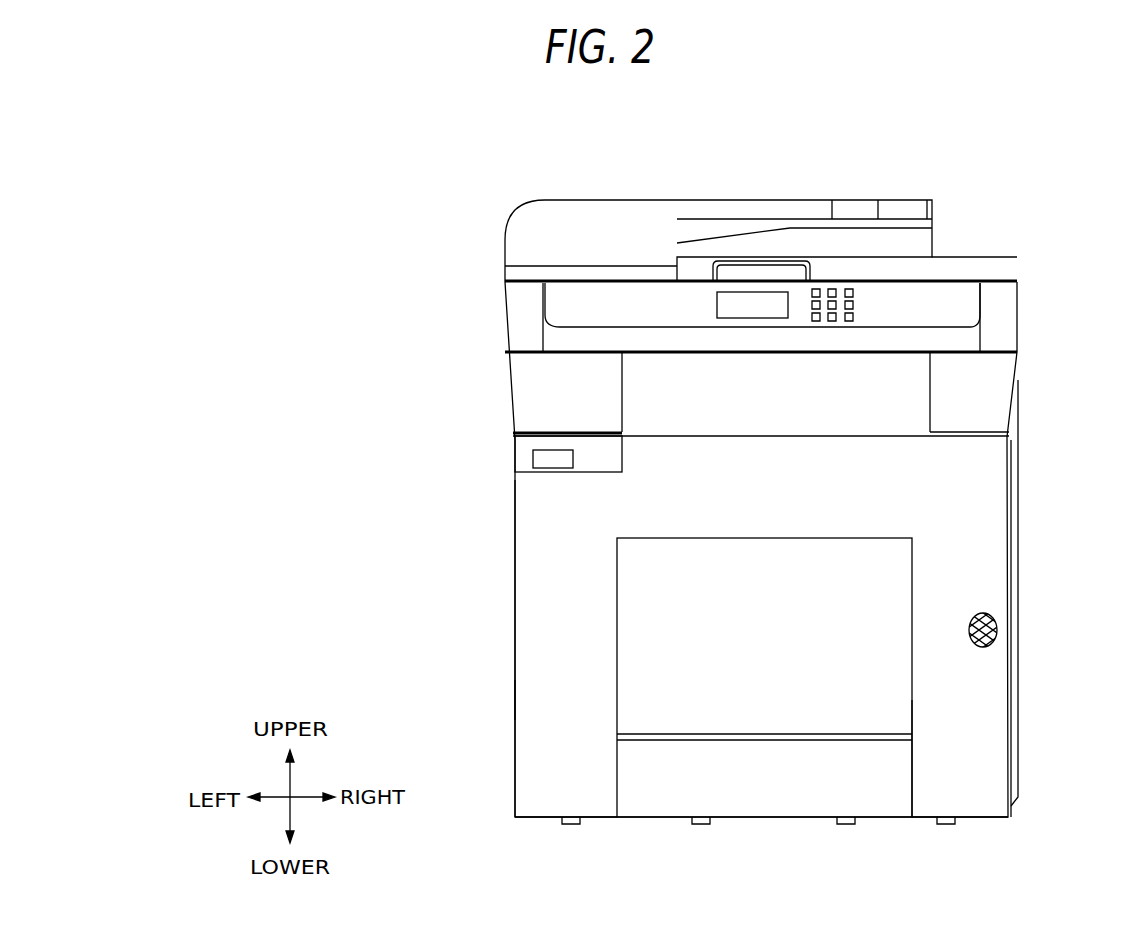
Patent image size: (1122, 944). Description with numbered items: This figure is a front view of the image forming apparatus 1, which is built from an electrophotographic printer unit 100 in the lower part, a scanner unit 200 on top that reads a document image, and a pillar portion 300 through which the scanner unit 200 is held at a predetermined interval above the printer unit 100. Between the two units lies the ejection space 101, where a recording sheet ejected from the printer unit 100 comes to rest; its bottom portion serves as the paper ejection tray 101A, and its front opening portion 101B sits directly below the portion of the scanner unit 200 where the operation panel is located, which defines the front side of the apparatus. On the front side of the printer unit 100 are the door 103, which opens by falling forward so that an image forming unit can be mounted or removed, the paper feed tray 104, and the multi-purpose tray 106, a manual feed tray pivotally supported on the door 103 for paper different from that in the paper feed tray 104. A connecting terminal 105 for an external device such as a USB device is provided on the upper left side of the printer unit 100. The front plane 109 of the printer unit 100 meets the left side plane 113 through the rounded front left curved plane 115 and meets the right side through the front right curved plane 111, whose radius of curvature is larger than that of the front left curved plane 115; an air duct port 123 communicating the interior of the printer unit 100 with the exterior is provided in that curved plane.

The image forming apparatus 1 is at (780, 178).
The printer unit 100 is at (934, 457).
The ejection space 101 is at (888, 383).
The paper ejection tray 101A is at (820, 427).
The opening portion 101B is at (930, 402).
The scanner unit 200 is at (633, 188).
The pillar portion 300 is at (527, 386).
The connecting terminal 105 is at (545, 465).
The left side plane 113 is at (515, 622).
The door 103 is at (505, 703).
The front left curved plane 115 is at (515, 767).
The front plane 109 is at (550, 790).
The paper feed tray 104 is at (680, 780).
The multi-purpose tray 106 is at (883, 712).
The front right curved plane 111 is at (975, 783).
The air duct port 123 is at (990, 614).